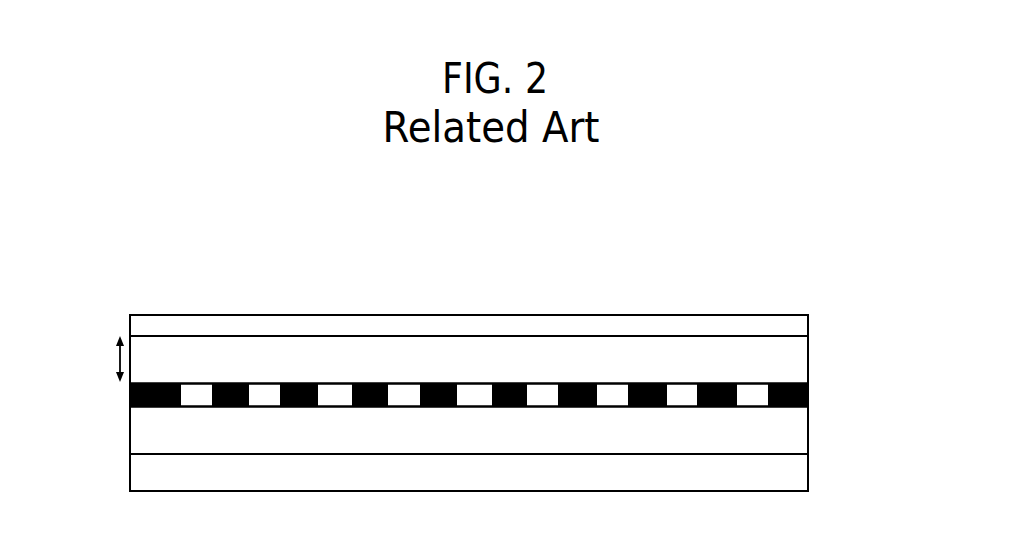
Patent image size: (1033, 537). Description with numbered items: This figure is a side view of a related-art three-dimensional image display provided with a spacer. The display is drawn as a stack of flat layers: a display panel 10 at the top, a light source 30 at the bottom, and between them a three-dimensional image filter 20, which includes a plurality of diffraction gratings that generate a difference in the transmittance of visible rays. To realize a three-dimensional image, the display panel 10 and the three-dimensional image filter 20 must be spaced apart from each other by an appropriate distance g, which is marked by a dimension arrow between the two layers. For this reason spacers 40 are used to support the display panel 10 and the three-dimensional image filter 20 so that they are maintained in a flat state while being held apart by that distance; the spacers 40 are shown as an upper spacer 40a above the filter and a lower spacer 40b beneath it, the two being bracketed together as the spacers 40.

The display panel 10 is at (141, 326).
The three-dimensional image filter 20 is at (130, 396).
The light source 30 is at (141, 472).
The spacers 40 is at (543, 395).
The spacer 40a is at (799, 359).
The spacer 40b is at (799, 433).
The distance g is at (110, 359).